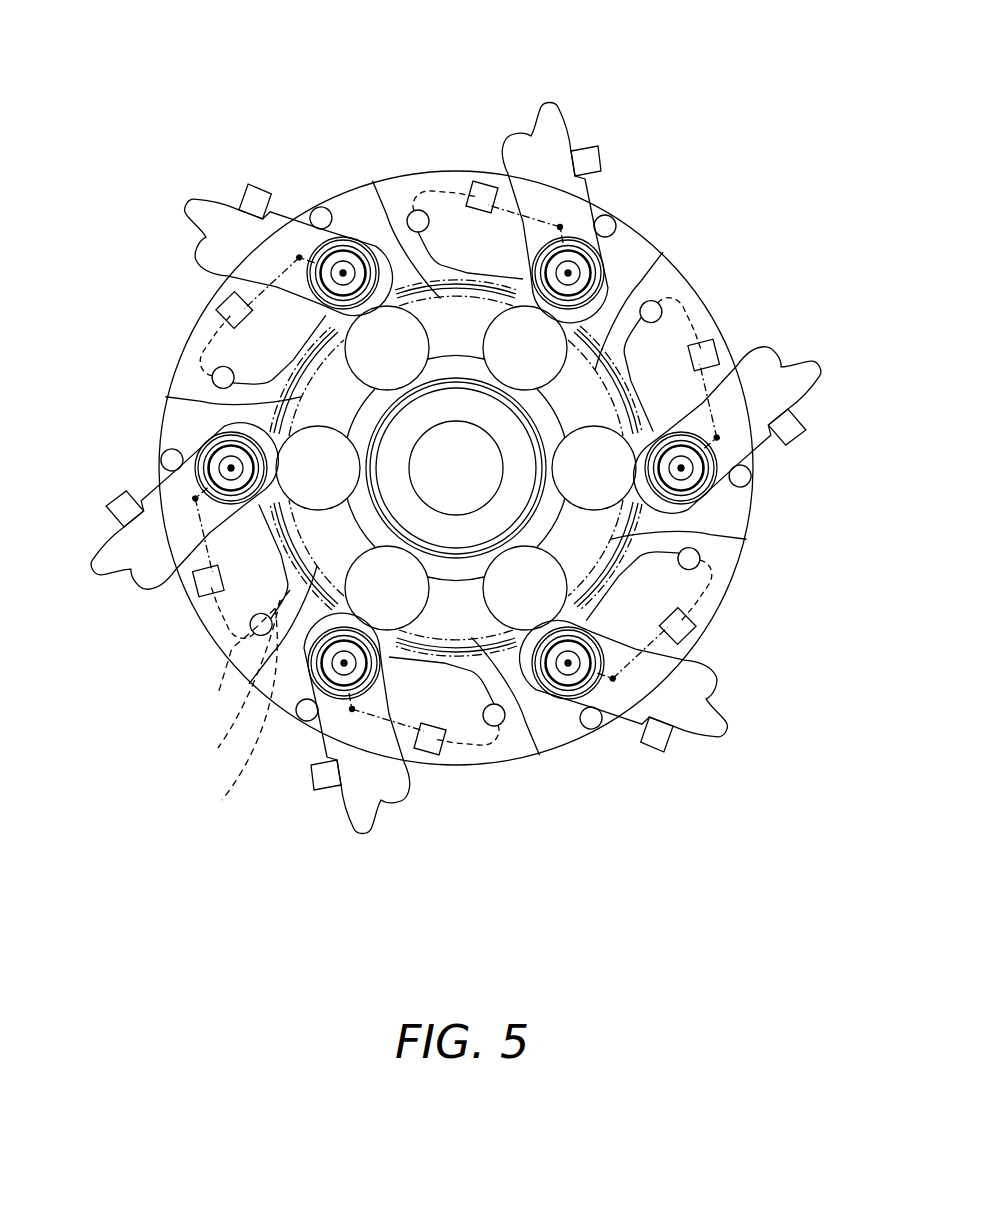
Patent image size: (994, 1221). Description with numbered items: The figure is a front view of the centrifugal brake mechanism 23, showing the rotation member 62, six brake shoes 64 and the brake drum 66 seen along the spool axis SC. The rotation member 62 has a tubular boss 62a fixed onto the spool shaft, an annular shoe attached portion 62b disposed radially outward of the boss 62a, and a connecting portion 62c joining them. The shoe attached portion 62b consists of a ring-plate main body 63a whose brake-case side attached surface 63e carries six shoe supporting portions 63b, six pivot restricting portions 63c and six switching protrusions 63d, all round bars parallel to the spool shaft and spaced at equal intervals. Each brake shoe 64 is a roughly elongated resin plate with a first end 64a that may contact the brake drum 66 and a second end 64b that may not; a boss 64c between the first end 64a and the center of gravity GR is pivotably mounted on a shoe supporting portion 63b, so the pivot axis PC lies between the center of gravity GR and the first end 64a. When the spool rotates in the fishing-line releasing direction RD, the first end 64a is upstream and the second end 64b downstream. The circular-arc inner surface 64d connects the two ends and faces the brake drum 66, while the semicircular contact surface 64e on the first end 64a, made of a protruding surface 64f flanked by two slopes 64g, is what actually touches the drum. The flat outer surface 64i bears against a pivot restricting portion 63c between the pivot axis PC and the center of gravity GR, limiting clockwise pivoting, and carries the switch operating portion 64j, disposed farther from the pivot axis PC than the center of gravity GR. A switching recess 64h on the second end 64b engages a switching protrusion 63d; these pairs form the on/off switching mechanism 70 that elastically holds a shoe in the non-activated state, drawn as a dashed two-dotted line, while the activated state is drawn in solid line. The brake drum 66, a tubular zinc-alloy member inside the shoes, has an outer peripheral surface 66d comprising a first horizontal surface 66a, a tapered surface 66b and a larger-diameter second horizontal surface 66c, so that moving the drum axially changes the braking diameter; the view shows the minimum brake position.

The centrifugal brake mechanism 23 is at (624, 99).
The rotation member 62 is at (567, 797).
The tubular boss 62a is at (710, 536).
The annular shoe attached portion 62b is at (688, 258).
The connecting portion 62c is at (745, 410).
The main body 63a is at (682, 248).
The shoe supporting portion 63b is at (300, 245).
The pivot restricting portion 63c is at (293, 242).
The switching protrusion 63d is at (204, 393).
The attached surface 63e is at (660, 290).
The brake shoe 64 is at (543, 102).
The first end 64a is at (360, 238).
The second end 64b is at (185, 207).
The boss 64c is at (325, 210).
The inner surface 64d is at (325, 278).
The contact surface 64e is at (222, 378).
The protruding surface 64f is at (395, 255).
The slope 64g is at (355, 240).
The switching recess 64h is at (207, 242).
The outer surface 64i is at (338, 240).
The switch operating portion 64j is at (270, 258).
The brake drum 66 is at (290, 572).
The first horizontal surface 66a is at (221, 714).
The tapered surface 66b is at (222, 684).
The second horizontal surface 66c is at (227, 655).
The outer peripheral surface 66d is at (158, 690).
The on/off switching mechanism 70 is at (205, 395).
The pivot axis PC is at (290, 346).
The center of gravity GR is at (300, 253).
The fishing-line releasing direction RD is at (670, 202).
The spool axis SC is at (457, 468).